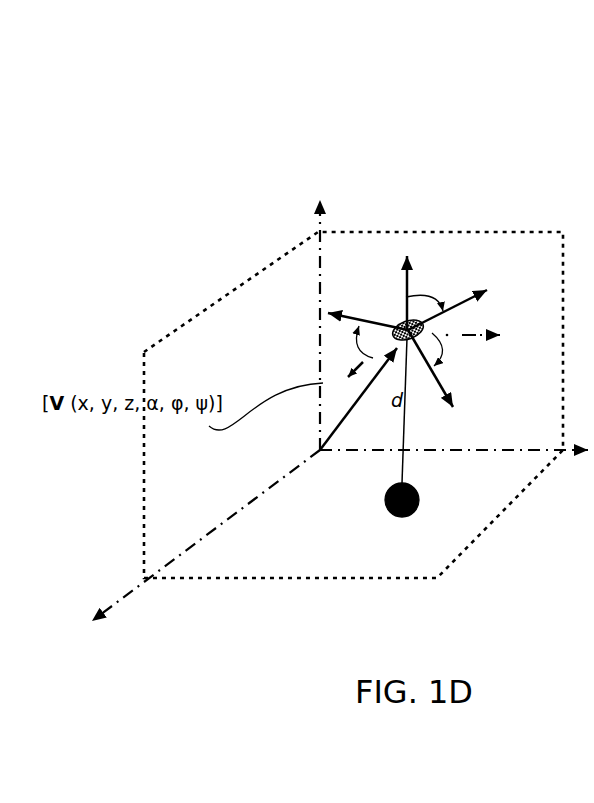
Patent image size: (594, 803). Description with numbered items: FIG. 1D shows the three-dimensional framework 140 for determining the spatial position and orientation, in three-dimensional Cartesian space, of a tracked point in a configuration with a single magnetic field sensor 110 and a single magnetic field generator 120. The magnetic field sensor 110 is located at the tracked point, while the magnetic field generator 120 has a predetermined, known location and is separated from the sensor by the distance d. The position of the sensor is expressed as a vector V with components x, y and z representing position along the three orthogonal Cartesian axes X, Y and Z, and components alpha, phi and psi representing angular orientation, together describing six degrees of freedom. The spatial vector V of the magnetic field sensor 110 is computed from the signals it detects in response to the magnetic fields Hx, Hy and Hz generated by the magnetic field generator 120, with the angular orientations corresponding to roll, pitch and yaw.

The 3-dimensional framework 140 is at (253, 195).
The magnetic field sensor 110 is at (402, 326).
The magnetic field generator 120 is at (458, 519).